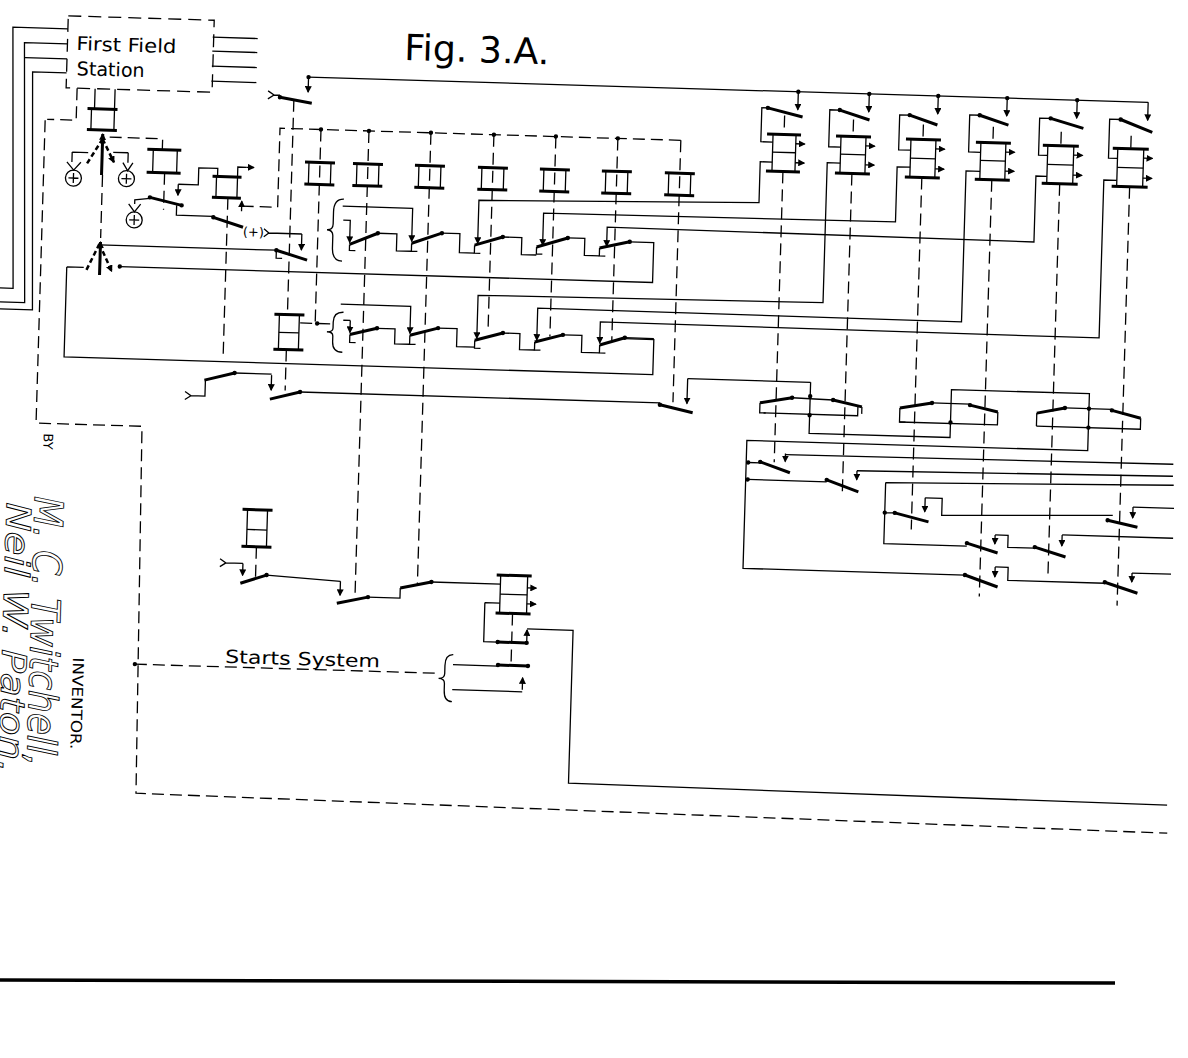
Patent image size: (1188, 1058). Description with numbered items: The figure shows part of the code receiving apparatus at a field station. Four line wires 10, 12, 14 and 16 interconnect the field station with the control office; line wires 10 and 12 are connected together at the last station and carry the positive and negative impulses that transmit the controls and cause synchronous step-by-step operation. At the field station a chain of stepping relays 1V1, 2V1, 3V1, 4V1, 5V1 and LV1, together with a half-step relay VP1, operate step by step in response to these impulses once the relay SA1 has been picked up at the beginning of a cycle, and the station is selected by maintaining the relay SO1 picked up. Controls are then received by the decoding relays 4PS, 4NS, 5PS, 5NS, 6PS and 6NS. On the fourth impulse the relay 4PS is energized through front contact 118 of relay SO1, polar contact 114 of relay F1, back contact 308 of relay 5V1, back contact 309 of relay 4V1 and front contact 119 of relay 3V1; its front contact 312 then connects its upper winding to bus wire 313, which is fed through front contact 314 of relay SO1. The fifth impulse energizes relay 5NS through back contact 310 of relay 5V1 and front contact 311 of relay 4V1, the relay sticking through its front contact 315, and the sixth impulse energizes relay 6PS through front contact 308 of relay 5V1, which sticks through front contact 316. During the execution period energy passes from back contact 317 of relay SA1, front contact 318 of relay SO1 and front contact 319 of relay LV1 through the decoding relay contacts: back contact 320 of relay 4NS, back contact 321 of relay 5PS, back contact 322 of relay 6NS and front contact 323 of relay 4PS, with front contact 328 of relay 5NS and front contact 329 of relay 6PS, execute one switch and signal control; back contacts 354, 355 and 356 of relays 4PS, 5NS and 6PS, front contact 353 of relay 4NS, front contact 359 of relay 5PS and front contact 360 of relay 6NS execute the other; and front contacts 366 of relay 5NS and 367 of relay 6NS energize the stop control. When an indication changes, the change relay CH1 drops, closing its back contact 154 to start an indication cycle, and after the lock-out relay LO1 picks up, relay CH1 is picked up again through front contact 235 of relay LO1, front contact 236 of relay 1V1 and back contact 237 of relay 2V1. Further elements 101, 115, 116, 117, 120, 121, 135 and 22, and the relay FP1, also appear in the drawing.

The line wire 10 is at (36, 61).
The line wire 12 is at (37, 46).
The line wire 14 is at (37, 76).
The line wire 16 is at (33, 191).
The relay contact 101 is at (89, 157).
The polar contact 114 is at (85, 277).
The contact 135 is at (170, 226).
The front contact 118 is at (273, 268).
The bus wire 313 is at (728, 88).
The front contact 314 is at (276, 112).
The front contact 312 is at (781, 118).
The front contact 315 is at (1002, 129).
The front contact 316 is at (1074, 132).
The contact 121 is at (369, 246).
The contact 120 is at (432, 247).
The front contact 119 is at (499, 250).
The back contact 309 is at (563, 252).
The contact 308 is at (625, 254).
The contact 117 is at (371, 340).
The contact 116 is at (433, 343).
The contact 115 is at (496, 346).
The front contact 311 is at (556, 348).
The back contact 310 is at (620, 350).
The back contact 317 is at (218, 396).
The front contact 318 is at (285, 405).
The front contact 319 is at (667, 408).
The back contact 354 is at (759, 397).
The back contact 320 is at (856, 400).
The back contact 321 is at (899, 396).
The back contact 355 is at (997, 399).
The back contact 356 is at (1060, 397).
The back contact 322 is at (1137, 398).
The front contact 323 is at (796, 459).
The front contact 353 is at (832, 483).
The front contact 359 is at (909, 509).
The front contact 360 is at (1116, 504).
The front contact 328 is at (969, 538).
The front contact 329 is at (1056, 540).
The front contact 366 is at (985, 576).
The front contact 367 is at (1125, 578).
The front contact 235 is at (258, 595).
The front contact 236 is at (360, 611).
The back contact 237 is at (425, 595).
The contact 22 is at (531, 646).
The back contact 154 is at (510, 670).
The relay F1 is at (109, 131).
The relay FP1 is at (160, 161).
The relay SA1 is at (222, 258).
The half-step relay VP1 is at (325, 226).
The stepping relay 1V1 is at (371, 364).
The stepping relay 2V1 is at (434, 358).
The stepping relay 3V1 is at (501, 232).
The stepping relay 4V1 is at (560, 236).
The stepping relay 5V1 is at (626, 239).
The stepping relay LV1 is at (686, 271).
The decoding relay 4PS is at (788, 289).
The decoding relay 4NS is at (857, 306).
The decoding relay 5PS is at (927, 326).
The decoding relay 5NS is at (996, 361).
The decoding relay 6PS is at (1064, 351).
The decoding relay 6NS is at (1134, 369).
The relay SO1 is at (282, 323).
The lock-out relay LO1 is at (283, 515).
The change relay CH1 is at (523, 610).